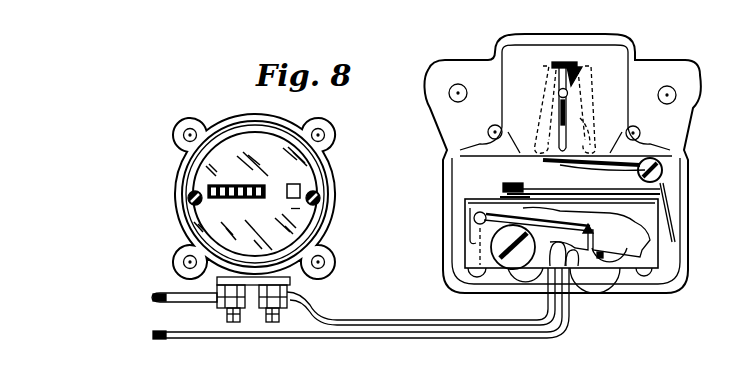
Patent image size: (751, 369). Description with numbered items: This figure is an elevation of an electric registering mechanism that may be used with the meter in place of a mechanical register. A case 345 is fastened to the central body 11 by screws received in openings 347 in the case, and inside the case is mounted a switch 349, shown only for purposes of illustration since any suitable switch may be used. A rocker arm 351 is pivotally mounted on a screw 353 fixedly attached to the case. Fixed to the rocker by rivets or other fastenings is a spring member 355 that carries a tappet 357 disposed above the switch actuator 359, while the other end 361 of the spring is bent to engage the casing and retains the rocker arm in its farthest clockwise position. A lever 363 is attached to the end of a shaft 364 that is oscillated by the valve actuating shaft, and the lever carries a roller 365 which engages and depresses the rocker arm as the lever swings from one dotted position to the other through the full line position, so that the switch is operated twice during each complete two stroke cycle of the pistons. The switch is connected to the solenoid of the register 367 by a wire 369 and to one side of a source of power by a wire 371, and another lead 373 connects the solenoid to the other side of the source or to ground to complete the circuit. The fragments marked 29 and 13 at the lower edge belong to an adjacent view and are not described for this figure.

The case 345 is at (689, 213).
The openings 347 is at (676, 96).
The switch 349 is at (655, 255).
The rocker arm 351 is at (583, 172).
The screw 353 is at (665, 170).
The spring member 355 is at (532, 183).
The tappet 357 is at (505, 185).
The switch actuator 359 is at (503, 196).
The other end of the spring 361 is at (678, 197).
The lever 363 is at (577, 97).
The shaft 364 is at (578, 74).
The roller 365 is at (580, 115).
The register 367 is at (341, 216).
The wire 369 is at (378, 320).
The wire 371 is at (378, 342).
The lead 373 is at (175, 291).
The adjacent figure element 29 is at (611, 368).
The adjacent figure element 13 is at (640, 366).
The central body 11 is at (727, 368).